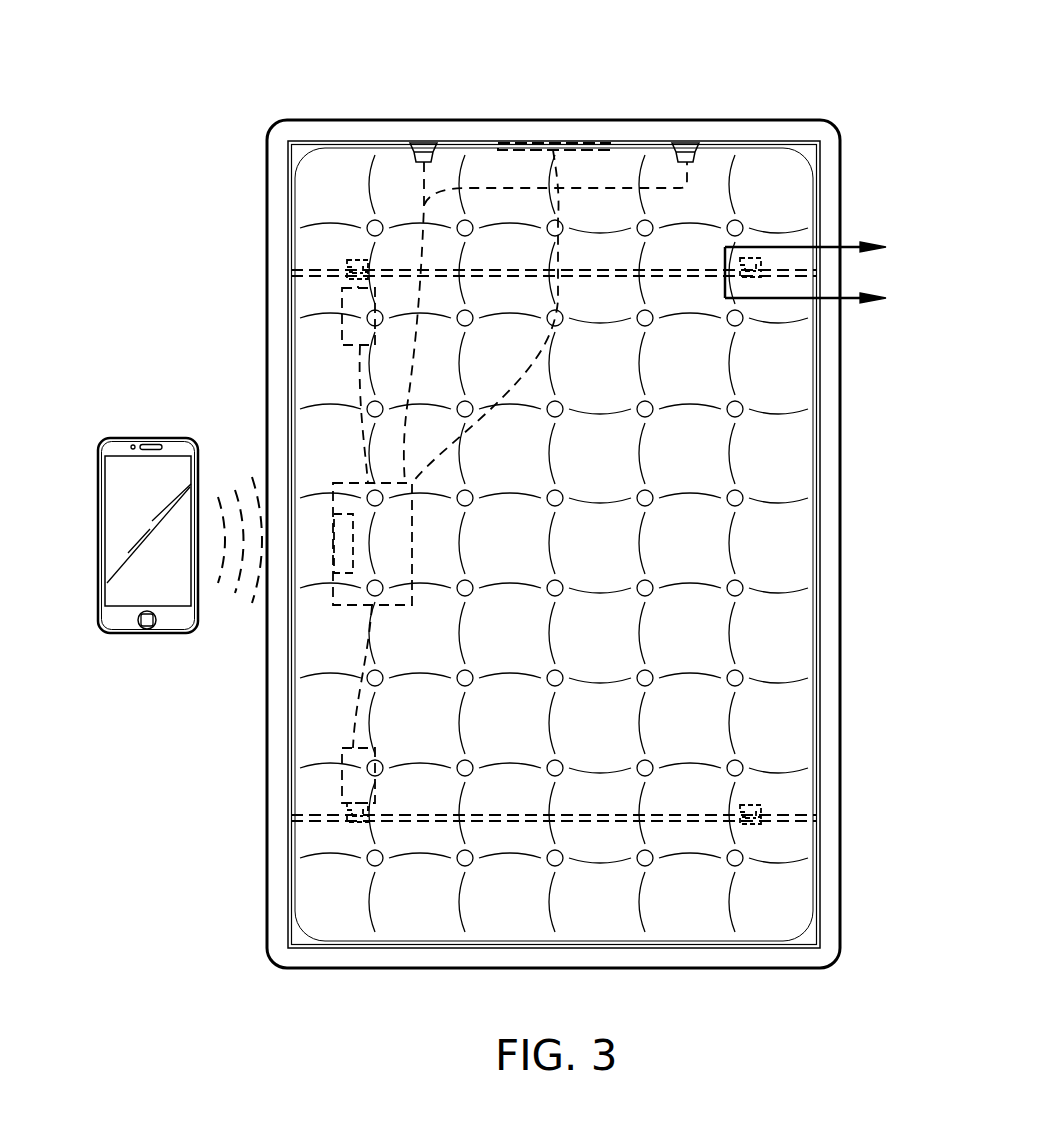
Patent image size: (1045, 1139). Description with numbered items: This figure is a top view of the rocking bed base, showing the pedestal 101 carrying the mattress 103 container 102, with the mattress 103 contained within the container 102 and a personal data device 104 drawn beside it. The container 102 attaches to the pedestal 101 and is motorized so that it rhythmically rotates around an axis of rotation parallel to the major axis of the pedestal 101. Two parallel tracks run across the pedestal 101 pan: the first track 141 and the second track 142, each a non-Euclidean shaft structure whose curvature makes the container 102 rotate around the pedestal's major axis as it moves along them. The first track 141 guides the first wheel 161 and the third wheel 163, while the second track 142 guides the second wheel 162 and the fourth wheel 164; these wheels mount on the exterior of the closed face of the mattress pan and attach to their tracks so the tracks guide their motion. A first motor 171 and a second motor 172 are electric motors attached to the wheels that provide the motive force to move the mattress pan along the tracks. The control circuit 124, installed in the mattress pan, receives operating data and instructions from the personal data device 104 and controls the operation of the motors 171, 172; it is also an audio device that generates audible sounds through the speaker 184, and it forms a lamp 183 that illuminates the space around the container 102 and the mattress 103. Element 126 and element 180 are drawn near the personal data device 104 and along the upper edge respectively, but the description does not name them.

The pedestal 101 is at (843, 498).
The mattress container 102 is at (828, 134).
The mattress 103 is at (315, 215).
The personal data device 104 is at (98, 452).
The control circuit 124 is at (355, 500).
The wireless signal 126 is at (237, 590).
The first track 141 is at (697, 275).
The second track 142 is at (660, 815).
The first wheel 161 is at (357, 260).
The second wheel 162 is at (352, 823).
The third wheel 163 is at (755, 258).
The fourth wheel 164 is at (760, 806).
The first motor 171 is at (343, 327).
The second motor 172 is at (350, 780).
The power connector 180 is at (685, 143).
The lamp 183 is at (424, 143).
The speaker 184 is at (533, 143).